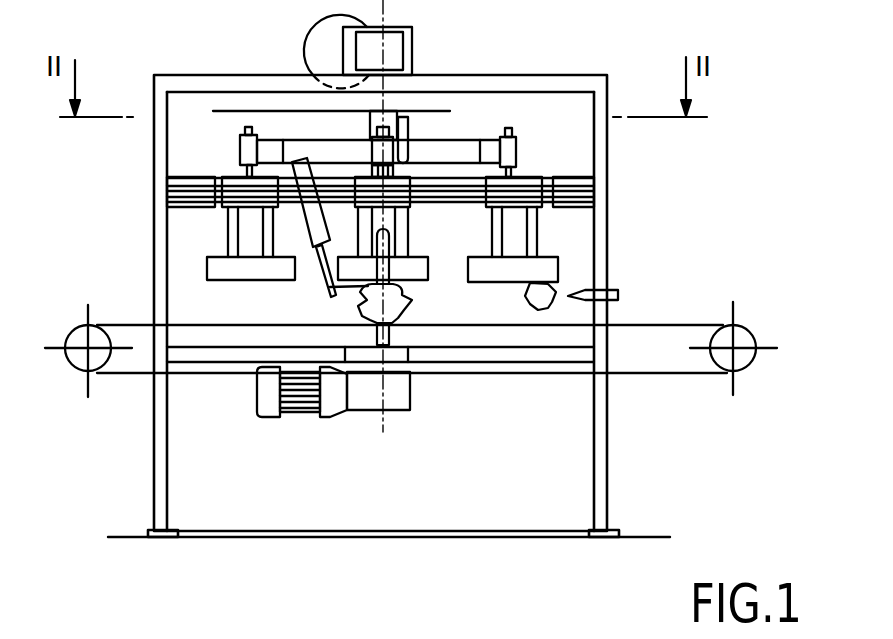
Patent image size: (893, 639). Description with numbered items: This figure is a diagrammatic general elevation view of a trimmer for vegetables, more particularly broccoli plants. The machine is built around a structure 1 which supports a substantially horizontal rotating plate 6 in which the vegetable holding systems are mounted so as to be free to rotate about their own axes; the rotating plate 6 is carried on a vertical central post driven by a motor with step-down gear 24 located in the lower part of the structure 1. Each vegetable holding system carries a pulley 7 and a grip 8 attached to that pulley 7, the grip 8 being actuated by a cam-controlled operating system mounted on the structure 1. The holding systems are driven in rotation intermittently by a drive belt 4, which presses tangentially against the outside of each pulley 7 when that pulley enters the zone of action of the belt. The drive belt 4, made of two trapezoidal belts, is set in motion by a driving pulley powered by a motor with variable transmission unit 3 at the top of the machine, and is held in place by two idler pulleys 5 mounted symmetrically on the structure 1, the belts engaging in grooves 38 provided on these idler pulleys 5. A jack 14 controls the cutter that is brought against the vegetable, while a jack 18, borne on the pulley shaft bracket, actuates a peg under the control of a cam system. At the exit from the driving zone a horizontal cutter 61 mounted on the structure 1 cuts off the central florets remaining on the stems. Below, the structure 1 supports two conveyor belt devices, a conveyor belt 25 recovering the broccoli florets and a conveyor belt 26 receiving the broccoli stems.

The structure 1 is at (544, 66).
The motor with variable transmission unit 3 is at (395, 48).
The drive belt 4 is at (217, 175).
The idler pulleys 5 is at (173, 176).
The rotating plate 6 is at (460, 150).
The pulley 7 is at (525, 177).
The grip 8 is at (213, 270).
The jack 14 is at (302, 158).
The jack 18 is at (407, 123).
The motor with step-down gear 24 is at (287, 416).
The conveyor belt 25 is at (722, 364).
The conveyor belt 26 is at (507, 335).
The grooves 38 is at (586, 177).
The horizontal cutter 61 is at (584, 290).